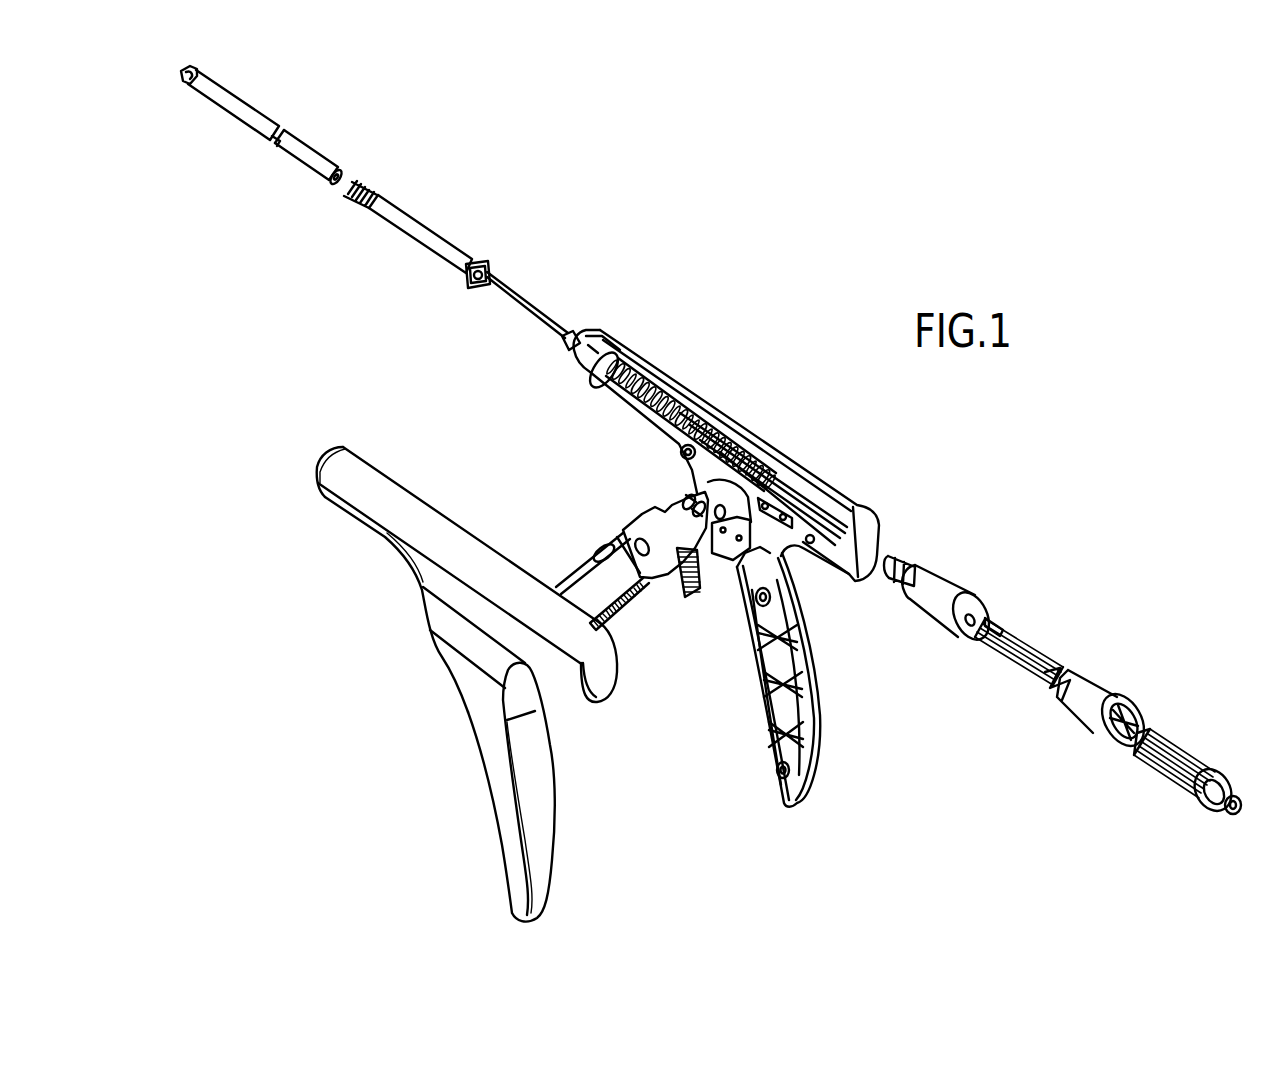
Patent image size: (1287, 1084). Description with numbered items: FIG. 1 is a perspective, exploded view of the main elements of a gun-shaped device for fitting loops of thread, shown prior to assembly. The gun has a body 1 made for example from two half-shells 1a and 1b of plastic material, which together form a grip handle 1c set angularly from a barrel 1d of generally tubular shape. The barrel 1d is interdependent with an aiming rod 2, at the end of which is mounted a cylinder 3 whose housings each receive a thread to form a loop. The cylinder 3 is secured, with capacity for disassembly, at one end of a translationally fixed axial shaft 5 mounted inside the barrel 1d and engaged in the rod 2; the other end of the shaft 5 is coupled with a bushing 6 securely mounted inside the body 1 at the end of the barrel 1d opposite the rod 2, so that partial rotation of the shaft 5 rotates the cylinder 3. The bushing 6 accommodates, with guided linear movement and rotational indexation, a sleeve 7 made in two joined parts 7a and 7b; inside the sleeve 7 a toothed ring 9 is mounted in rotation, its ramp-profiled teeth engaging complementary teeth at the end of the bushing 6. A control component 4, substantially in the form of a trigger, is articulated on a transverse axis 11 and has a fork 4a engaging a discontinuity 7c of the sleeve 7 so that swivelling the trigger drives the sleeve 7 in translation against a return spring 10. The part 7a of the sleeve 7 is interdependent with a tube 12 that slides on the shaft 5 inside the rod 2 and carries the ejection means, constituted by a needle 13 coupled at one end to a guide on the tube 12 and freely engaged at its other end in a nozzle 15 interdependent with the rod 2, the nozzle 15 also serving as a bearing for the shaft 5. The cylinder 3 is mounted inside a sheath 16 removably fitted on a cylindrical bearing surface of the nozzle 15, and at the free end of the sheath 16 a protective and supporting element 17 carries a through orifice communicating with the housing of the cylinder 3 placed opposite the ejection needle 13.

The body 1 is at (381, 580).
The half-shell 1a is at (457, 663).
The half-shell 1b is at (753, 672).
The grip handle 1c is at (545, 793).
The barrel 1d is at (414, 500).
The aiming rod 2 is at (418, 229).
The cylinder 3 is at (300, 150).
The control component 4 is at (594, 568).
The fork 4a is at (688, 499).
The axial shaft 5 is at (508, 292).
The bushing 6 is at (1168, 767).
The sleeve 7 is at (922, 628).
The sleeve part 7a is at (950, 598).
The sleeve part 7b is at (1083, 707).
The discontinuity 7c is at (895, 562).
The toothed ring 9 is at (983, 643).
The return spring 10 is at (641, 386).
The transverse axis 11 is at (641, 546).
The tube 12 is at (755, 468).
The needle 13 is at (533, 320).
The nozzle 15 is at (350, 189).
The sheath 16 is at (248, 114).
The protective and supporting element 17 is at (193, 83).